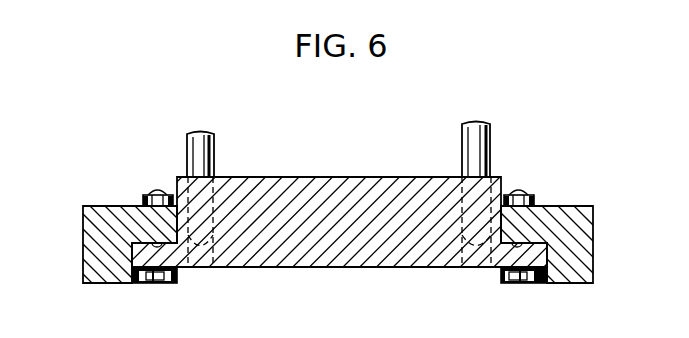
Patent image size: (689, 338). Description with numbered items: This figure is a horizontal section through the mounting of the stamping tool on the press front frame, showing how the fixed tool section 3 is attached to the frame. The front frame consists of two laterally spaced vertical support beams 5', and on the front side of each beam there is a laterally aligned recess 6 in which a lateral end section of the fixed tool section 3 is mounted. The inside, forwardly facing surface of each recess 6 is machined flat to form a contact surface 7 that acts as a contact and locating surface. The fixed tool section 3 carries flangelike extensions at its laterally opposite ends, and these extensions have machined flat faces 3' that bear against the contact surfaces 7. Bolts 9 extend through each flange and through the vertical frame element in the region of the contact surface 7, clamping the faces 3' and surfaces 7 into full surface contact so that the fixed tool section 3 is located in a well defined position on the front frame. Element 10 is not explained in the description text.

The fixed tool section 3 is at (346, 207).
The machined flat face 3' is at (334, 234).
The vertical support beam 5' is at (333, 226).
The recess 6 is at (134, 283).
The contact surface 7 is at (152, 242).
The bolt 9 is at (160, 278).
The pin 10 is at (213, 137).